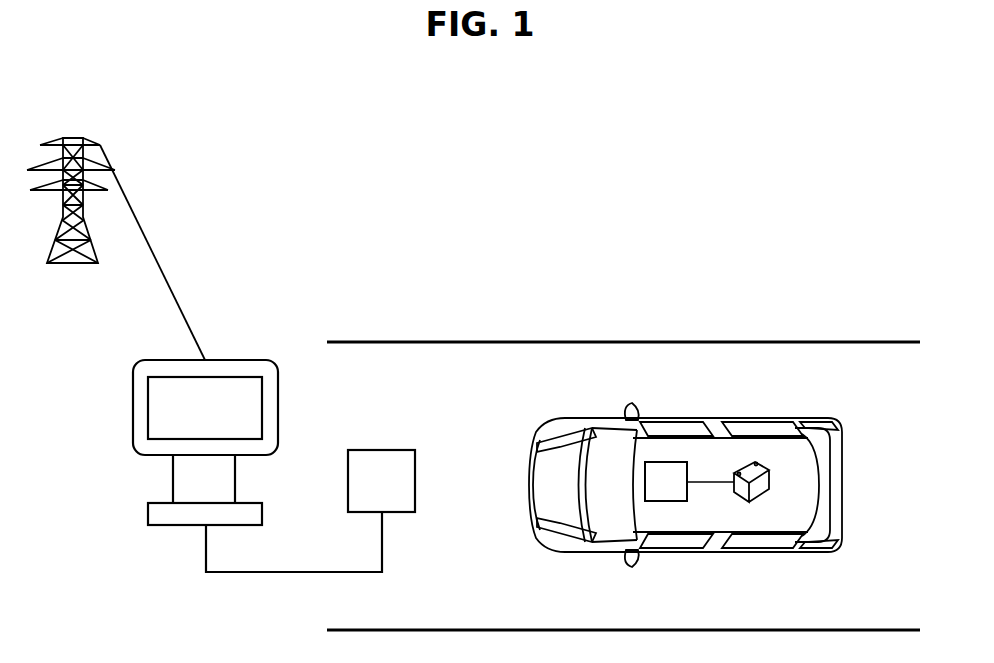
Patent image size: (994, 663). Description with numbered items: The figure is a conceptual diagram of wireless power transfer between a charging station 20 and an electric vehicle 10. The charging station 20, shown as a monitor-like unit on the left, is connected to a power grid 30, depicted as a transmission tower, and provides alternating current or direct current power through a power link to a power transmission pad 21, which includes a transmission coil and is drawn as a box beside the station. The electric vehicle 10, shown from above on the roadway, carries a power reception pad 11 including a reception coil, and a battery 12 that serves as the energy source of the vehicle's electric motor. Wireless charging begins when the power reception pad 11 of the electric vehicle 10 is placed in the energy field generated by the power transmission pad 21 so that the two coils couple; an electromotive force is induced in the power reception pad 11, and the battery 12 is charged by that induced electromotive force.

The electric vehicle 10 is at (703, 418).
The power reception pad 11 is at (665, 462).
The battery 12 is at (755, 462).
The charging station 20 is at (233, 360).
The power transmission pad 21 is at (378, 450).
The power grid 30 is at (70, 138).